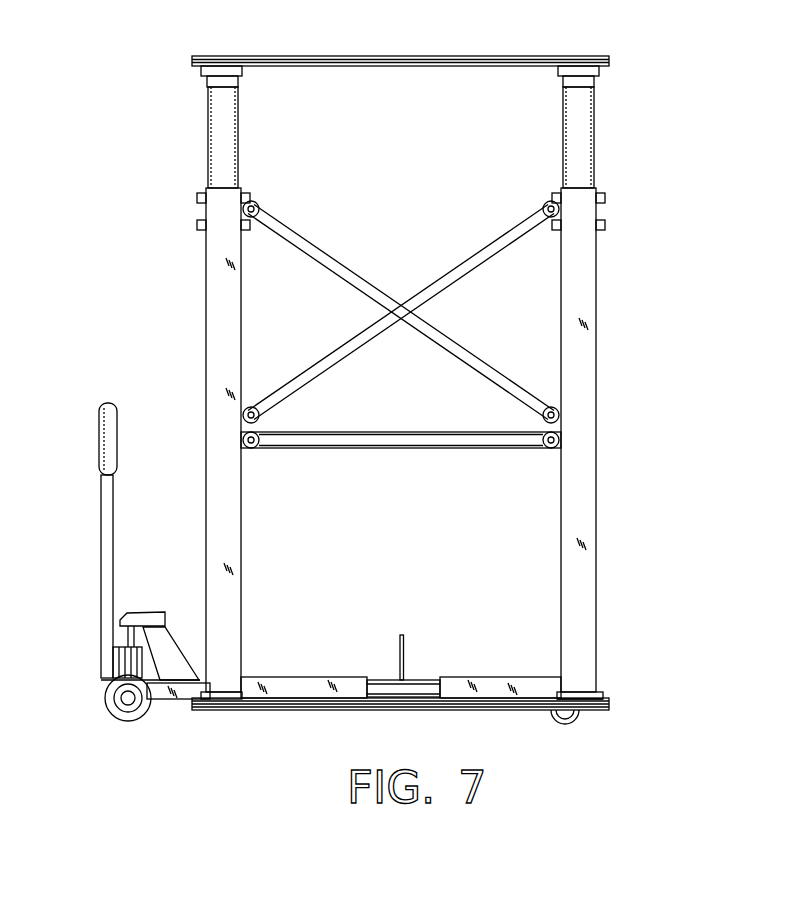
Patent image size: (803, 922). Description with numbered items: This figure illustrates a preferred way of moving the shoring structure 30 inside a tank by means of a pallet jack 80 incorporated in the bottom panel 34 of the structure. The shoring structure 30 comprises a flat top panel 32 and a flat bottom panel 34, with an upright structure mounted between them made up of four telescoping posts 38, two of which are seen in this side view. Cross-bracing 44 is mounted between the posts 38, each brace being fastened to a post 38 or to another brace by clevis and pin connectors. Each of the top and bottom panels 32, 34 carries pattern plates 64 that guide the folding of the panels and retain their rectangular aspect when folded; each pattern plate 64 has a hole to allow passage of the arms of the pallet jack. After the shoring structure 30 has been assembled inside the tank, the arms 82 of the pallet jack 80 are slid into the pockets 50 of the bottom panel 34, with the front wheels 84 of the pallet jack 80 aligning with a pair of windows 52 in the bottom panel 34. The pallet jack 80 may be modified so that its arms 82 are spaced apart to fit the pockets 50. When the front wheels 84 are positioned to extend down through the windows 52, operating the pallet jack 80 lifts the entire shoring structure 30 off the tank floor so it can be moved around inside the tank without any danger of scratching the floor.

The shoring structure 30 is at (120, 78).
The top panel 32 is at (388, 57).
The bottom panel 34 is at (300, 712).
The telescoping post 38 is at (597, 290).
The cross-bracing 44 is at (468, 259).
The pocket 50 is at (291, 675).
The window 52 is at (613, 742).
The pattern plate 64 is at (405, 640).
The pallet jack 80 is at (178, 632).
The arm 82 is at (420, 684).
The front wheel 84 is at (562, 723).